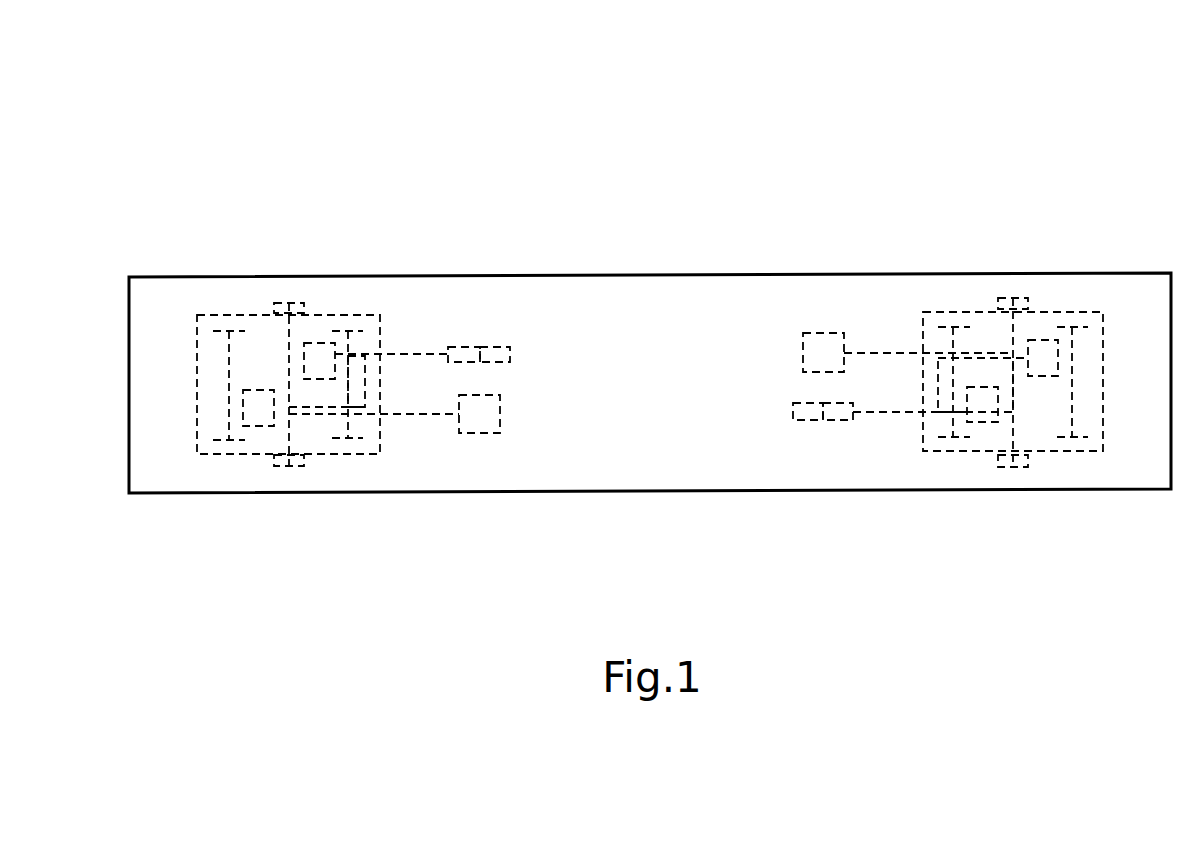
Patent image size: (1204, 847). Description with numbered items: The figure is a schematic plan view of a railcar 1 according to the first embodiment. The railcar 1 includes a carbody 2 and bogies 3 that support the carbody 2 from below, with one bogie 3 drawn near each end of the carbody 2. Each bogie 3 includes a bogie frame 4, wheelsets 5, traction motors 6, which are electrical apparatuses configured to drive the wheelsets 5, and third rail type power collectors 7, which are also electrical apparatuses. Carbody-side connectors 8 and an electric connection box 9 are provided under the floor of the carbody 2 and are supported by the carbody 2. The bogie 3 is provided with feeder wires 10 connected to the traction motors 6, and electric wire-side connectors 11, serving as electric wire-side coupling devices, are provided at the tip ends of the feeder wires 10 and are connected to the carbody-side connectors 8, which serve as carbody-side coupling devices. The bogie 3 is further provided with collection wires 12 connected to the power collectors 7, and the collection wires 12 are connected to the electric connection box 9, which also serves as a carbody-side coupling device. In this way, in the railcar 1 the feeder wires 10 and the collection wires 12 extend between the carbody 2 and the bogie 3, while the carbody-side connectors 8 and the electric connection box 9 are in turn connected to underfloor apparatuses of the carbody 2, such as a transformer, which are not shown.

The railcar 1 is at (207, 143).
The carbody 2 is at (658, 495).
The bogie 3 is at (572, 379).
The bogie frame 4 is at (215, 315).
The wheelset 5 is at (229, 373).
The traction motor 6 is at (318, 343).
The third rail type power collector 7 is at (290, 302).
The carbody-side connector 8 is at (490, 347).
The electric connection box 9 is at (473, 433).
The feeder wire 10 is at (415, 352).
The electric wire-side connector 11 is at (462, 347).
The collection wire 12 is at (420, 414).